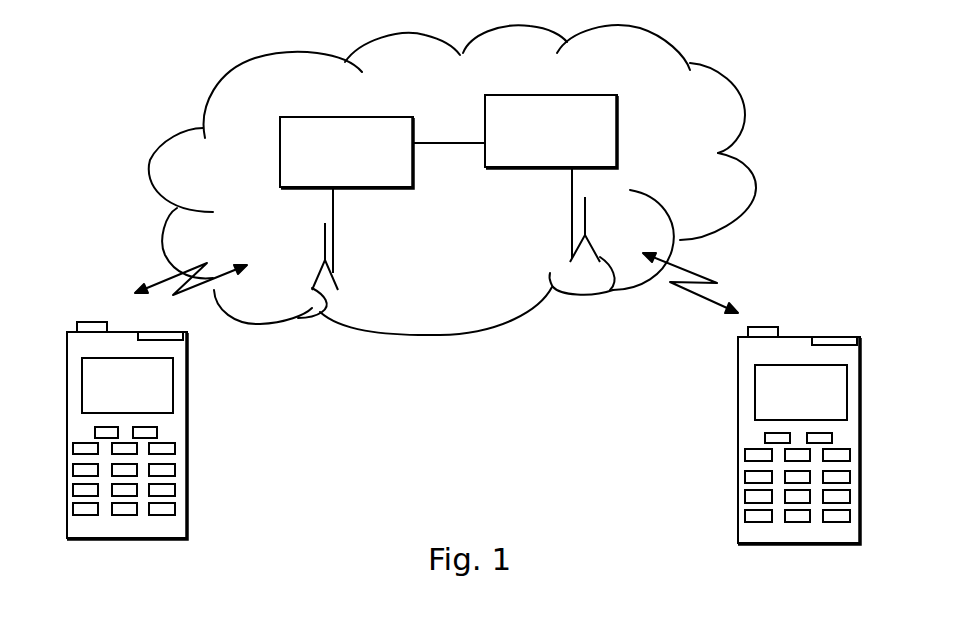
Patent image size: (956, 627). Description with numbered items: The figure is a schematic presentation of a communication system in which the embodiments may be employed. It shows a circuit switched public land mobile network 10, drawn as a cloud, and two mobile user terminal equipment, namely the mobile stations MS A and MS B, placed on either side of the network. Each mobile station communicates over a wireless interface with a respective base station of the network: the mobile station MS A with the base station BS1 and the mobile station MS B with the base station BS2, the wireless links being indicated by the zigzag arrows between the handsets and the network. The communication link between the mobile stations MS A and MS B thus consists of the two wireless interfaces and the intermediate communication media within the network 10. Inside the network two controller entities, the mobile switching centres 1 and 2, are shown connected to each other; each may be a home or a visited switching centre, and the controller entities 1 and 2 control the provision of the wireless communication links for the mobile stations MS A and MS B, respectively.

The mobile switching centre 1 is at (383, 173).
The mobile switching centre 2 is at (535, 167).
The PLMN network 10 is at (478, 334).
The base station BS1 is at (312, 308).
The base station BS2 is at (597, 295).
The mobile station MS A is at (182, 465).
The mobile station MS B is at (747, 500).